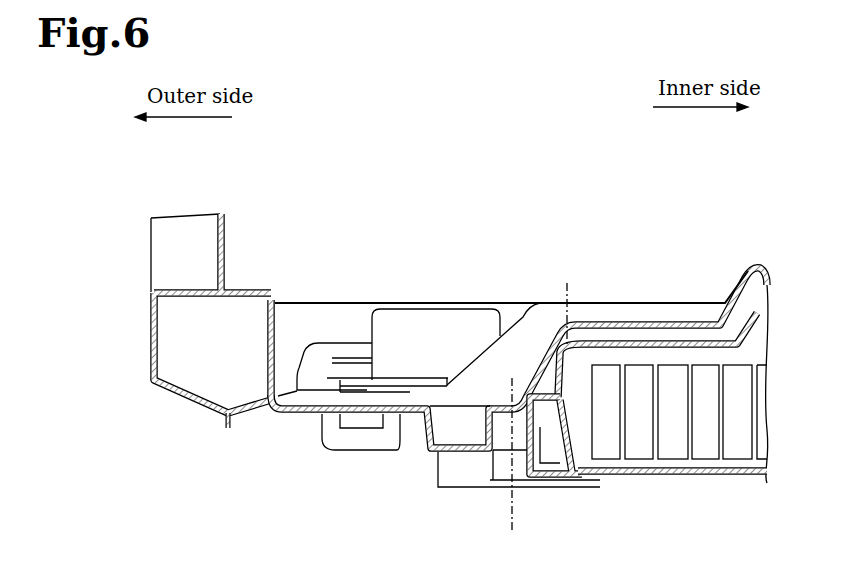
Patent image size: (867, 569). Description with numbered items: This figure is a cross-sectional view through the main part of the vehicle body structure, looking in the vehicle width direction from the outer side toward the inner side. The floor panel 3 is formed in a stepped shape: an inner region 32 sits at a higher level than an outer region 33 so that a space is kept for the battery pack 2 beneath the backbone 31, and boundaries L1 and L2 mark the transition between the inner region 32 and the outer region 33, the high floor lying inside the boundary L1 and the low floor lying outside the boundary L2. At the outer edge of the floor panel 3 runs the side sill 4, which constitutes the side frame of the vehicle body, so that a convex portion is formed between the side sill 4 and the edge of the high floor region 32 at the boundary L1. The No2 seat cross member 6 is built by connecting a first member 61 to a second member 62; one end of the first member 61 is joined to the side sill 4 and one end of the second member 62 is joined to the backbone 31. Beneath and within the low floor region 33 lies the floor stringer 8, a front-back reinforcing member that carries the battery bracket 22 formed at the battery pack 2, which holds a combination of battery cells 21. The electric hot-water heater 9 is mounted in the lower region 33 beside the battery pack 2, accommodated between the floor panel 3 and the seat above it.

The battery pack 2 is at (736, 486).
The battery cells 21 is at (675, 438).
The battery bracket 22 is at (509, 466).
The floor panel 3 is at (385, 432).
The backbone 31 is at (746, 275).
The inner region 32 is at (647, 322).
The outer region 33 is at (355, 408).
The side sill 4 is at (192, 337).
The No2 seat cross member 6 is at (507, 230).
The first member 61 is at (389, 395).
The second member 62 is at (530, 335).
The floor stringer 8 is at (460, 456).
The electric hot-water heater 9 is at (400, 314).
The boundary L1 is at (567, 283).
The boundary L2 is at (495, 468).